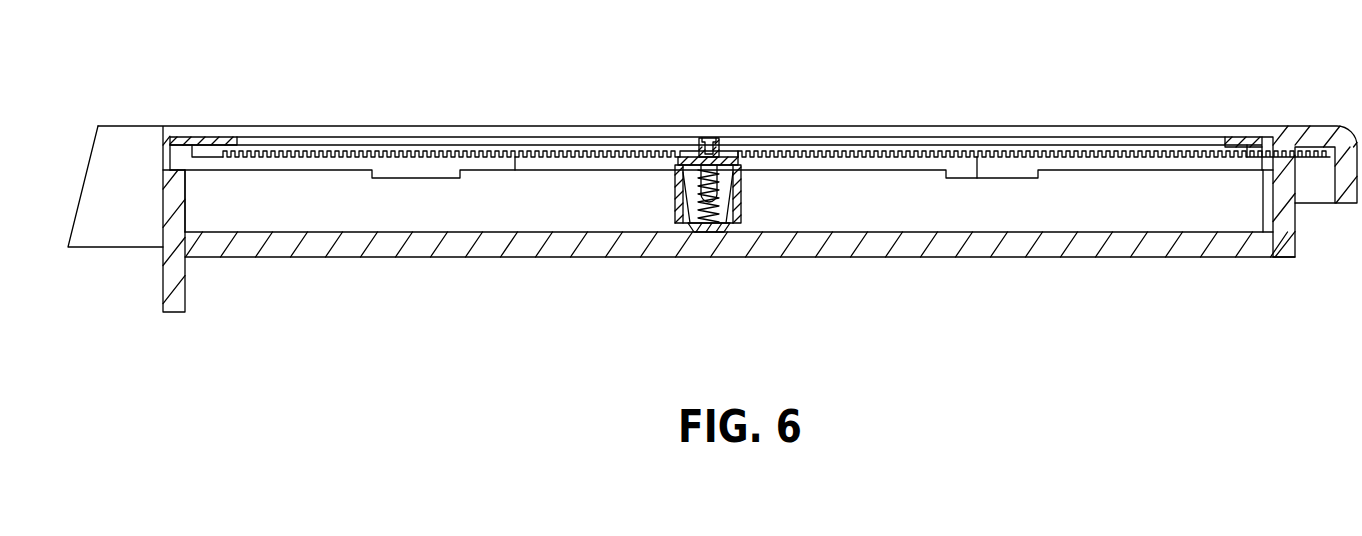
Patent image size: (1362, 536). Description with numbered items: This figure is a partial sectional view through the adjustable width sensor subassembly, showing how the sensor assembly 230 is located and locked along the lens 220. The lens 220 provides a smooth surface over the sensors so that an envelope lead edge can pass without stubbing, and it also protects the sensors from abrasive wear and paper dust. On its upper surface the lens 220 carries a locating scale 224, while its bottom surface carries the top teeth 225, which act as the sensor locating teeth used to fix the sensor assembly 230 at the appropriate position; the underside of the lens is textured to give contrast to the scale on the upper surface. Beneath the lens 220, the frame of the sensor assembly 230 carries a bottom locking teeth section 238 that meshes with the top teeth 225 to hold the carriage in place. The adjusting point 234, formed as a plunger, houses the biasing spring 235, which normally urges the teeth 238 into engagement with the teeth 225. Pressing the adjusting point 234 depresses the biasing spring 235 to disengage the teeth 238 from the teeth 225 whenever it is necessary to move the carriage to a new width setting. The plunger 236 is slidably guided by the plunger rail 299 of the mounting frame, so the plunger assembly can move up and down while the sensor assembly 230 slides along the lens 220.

The lens 220 is at (206, 140).
The locating scale 224 is at (293, 133).
The top teeth 225 is at (568, 155).
The sensor assembly 230 is at (762, 188).
The adjusting point 234 is at (698, 138).
The biasing spring 235 is at (702, 220).
The plunger 236 is at (737, 228).
The locking teeth section 238 is at (677, 153).
The plunger rail 299 is at (882, 232).